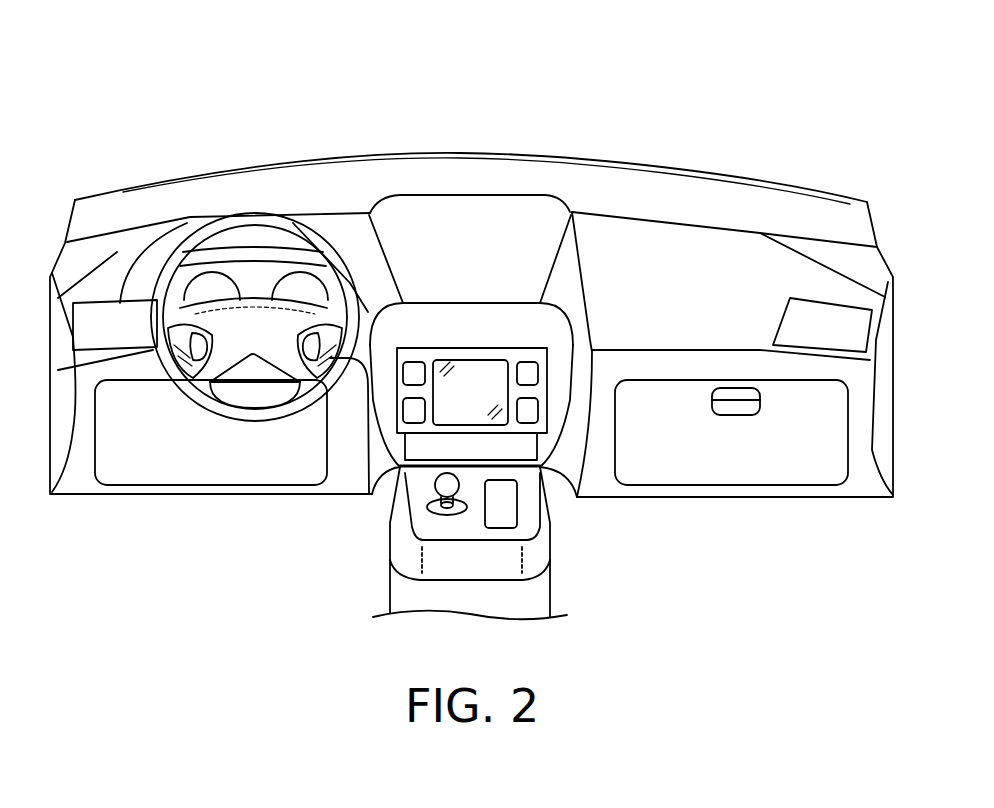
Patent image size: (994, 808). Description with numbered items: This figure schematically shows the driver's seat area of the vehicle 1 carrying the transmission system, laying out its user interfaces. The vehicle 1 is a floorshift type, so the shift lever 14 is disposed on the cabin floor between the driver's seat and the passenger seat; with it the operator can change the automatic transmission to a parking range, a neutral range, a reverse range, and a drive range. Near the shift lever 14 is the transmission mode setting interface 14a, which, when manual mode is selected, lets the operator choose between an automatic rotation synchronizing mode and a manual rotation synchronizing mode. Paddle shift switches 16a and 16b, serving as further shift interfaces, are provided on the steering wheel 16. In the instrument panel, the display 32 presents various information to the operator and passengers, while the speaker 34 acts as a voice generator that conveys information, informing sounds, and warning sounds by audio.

The vehicle 1 is at (578, 117).
The shift lever 14 is at (433, 483).
The transmission mode setting interface 14a is at (517, 503).
The steering wheel 16 is at (237, 420).
The paddle shift switch 16a is at (173, 383).
The paddle shift switch 16b is at (317, 362).
The display 32 is at (458, 365).
The speaker 34 is at (530, 365).